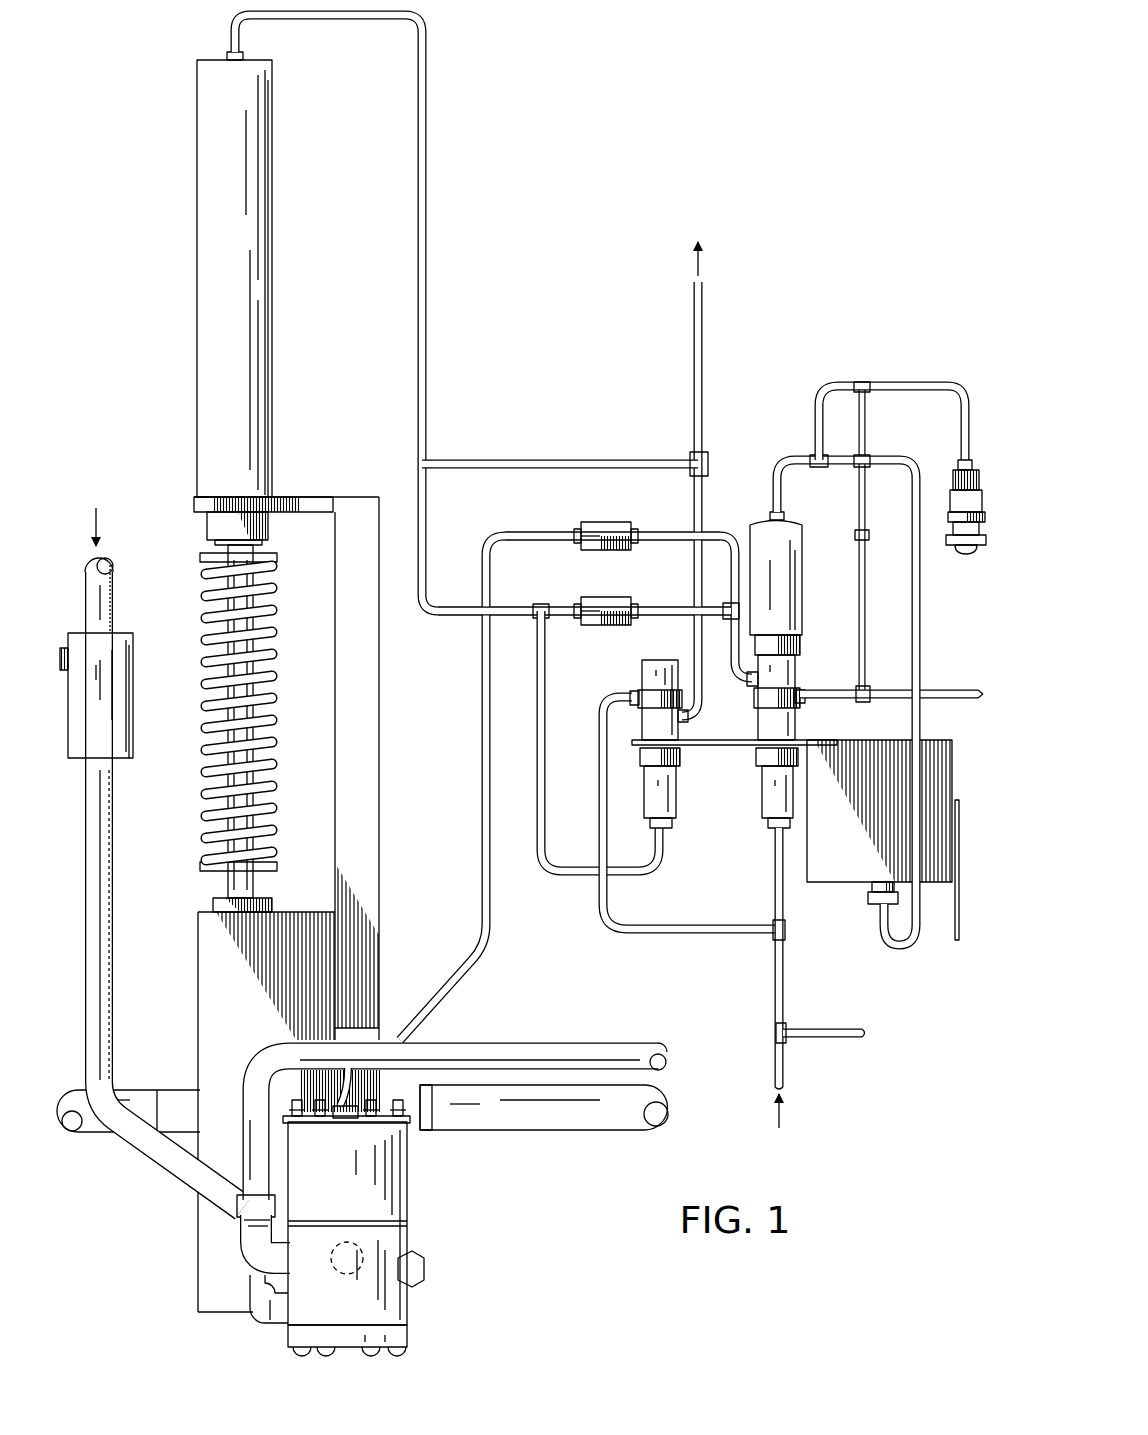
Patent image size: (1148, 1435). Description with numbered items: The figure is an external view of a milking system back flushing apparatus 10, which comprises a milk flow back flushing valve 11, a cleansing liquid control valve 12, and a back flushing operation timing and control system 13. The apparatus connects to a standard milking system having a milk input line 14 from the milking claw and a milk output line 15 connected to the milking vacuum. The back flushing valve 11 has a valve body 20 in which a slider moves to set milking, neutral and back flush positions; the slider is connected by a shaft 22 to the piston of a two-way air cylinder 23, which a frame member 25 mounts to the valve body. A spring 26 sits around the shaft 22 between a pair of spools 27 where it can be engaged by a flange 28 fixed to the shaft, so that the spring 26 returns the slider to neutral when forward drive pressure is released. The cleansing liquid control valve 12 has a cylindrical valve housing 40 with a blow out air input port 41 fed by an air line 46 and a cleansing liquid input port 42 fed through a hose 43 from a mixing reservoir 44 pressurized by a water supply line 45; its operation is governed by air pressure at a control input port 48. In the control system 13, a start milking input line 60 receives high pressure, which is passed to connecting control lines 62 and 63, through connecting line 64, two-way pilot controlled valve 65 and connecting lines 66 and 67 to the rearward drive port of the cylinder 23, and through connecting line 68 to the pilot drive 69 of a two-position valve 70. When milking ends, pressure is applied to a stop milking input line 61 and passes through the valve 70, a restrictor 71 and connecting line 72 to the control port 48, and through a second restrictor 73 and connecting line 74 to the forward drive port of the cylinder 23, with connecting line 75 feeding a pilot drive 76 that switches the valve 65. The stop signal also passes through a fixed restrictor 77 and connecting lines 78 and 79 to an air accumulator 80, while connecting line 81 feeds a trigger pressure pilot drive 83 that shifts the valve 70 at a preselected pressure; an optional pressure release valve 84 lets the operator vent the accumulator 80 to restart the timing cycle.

The milking system back flushing apparatus 10 is at (628, 455).
The milk flow back flushing valve 11 is at (383, 937).
The cleansing liquid control valve 12 is at (410, 1305).
The back flushing operation timing and control system 13 is at (786, 455).
The milk input line 14 is at (86, 1136).
The milk output line 15 is at (572, 1130).
The valve body 20 is at (198, 1246).
The shaft 22 is at (263, 721).
The two-way air cylinder 23 is at (200, 250).
The frame member 25 is at (382, 730).
The spring 26 is at (277, 658).
The spools 27 is at (277, 580).
The flange 28 is at (262, 540).
The cylindrical valve housing 40 is at (408, 1245).
The blow out air input port 41 is at (238, 1255).
The cleansing liquid input port 42 is at (256, 1322).
The hose 43 is at (114, 862).
The mixing reservoir 44 is at (134, 670).
The water supply line 45 is at (114, 598).
The air line 46 is at (540, 1043).
The control input port 48 is at (336, 1104).
The start milking input line 60 is at (788, 1062).
The stop milking input line 61 is at (972, 690).
The connecting control line 62 is at (822, 1030).
The connecting control line 63 is at (705, 362).
The connecting line 64 is at (667, 934).
The two-way pilot controlled valve 65 is at (642, 682).
The connecting line 66 is at (704, 512).
The connecting line 67 is at (516, 455).
The connecting line 68 is at (775, 855).
The pilot drive 69 is at (762, 795).
The two-position valve 70 is at (797, 672).
The restrictor 71 is at (605, 522).
The connecting line 72 is at (492, 937).
The second restrictor 73 is at (606, 597).
The connecting line 74 is at (428, 250).
The connecting line 75 is at (547, 702).
The pilot drive 76 is at (679, 795).
The fixed restrictor 77 is at (868, 542).
The connecting line 78 is at (832, 380).
The connecting line 79 is at (922, 628).
The air volume chamber or accumulator 80 is at (850, 884).
The connecting line 81 is at (785, 514).
The trigger pressure pilot drive 83 is at (803, 590).
The pressure release valve 84 is at (955, 490).